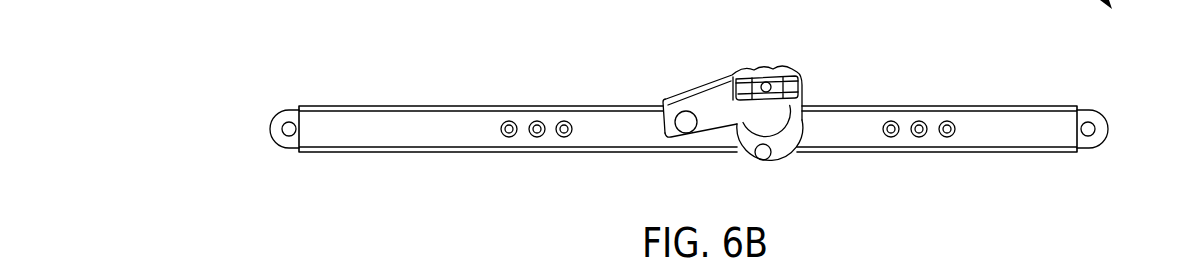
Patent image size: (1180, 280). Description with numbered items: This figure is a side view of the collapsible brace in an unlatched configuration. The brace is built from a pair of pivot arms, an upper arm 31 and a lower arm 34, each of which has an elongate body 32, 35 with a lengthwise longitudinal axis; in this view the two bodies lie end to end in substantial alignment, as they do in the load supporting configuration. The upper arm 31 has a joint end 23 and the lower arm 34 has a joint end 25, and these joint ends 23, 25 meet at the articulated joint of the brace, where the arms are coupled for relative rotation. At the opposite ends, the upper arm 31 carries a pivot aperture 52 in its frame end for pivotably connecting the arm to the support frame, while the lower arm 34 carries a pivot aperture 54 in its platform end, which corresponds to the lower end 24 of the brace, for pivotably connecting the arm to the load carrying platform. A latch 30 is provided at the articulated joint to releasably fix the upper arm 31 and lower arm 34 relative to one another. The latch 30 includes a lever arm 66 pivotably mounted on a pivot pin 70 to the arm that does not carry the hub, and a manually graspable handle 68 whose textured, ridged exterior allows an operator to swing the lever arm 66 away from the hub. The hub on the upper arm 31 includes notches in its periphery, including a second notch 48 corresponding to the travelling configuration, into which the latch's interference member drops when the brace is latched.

The joint end 23 is at (805, 163).
The lower end 24 is at (269, 144).
The joint end 25 is at (745, 163).
The latch 30 is at (747, 110).
The upper arm 31 is at (937, 105).
The elongate body 32 is at (1005, 128).
The lower arm 34 is at (518, 104).
The elongate body 35 is at (363, 126).
The second notch 48 is at (764, 158).
The pivot aperture 52 is at (1095, 128).
The pivot aperture 54 is at (287, 125).
The lever arm 66 is at (712, 95).
The manually graspable handle 68 is at (782, 73).
The pivot pin 70 is at (686, 125).